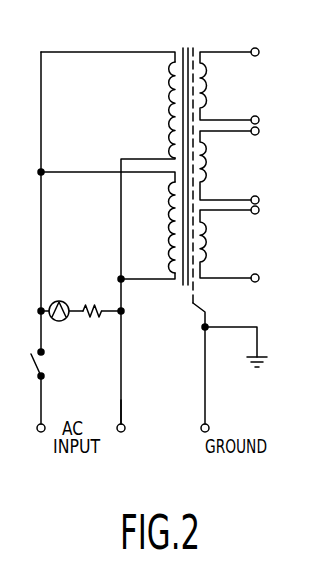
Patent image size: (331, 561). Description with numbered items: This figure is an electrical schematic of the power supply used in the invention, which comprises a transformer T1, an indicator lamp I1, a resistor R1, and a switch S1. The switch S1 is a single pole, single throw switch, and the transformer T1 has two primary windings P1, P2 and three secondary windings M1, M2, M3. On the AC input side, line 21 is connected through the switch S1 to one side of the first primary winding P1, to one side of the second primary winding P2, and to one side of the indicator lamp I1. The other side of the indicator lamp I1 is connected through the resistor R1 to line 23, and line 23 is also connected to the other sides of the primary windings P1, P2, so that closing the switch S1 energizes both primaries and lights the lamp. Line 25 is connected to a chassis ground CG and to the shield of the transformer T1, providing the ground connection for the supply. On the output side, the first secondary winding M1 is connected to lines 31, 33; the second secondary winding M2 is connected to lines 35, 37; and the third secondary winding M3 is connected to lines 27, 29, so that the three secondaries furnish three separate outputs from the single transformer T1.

The line 21 is at (44, 410).
The line 23 is at (121, 410).
The line 25 is at (206, 388).
The line 27 is at (219, 210).
The line 29 is at (224, 270).
The line 31 is at (227, 40).
The line 33 is at (224, 108).
The line 35 is at (221, 131).
The line 37 is at (222, 190).
The transformer T1 is at (190, 176).
The primary winding P1 is at (164, 110).
The primary winding P2 is at (168, 222).
The secondary winding M1 is at (206, 76).
The secondary winding M2 is at (208, 166).
The secondary winding M3 is at (208, 246).
The indicator lamp I1 is at (66, 300).
The resistor R1 is at (99, 303).
The switch S1 is at (34, 363).
The chassis ground CG is at (258, 360).